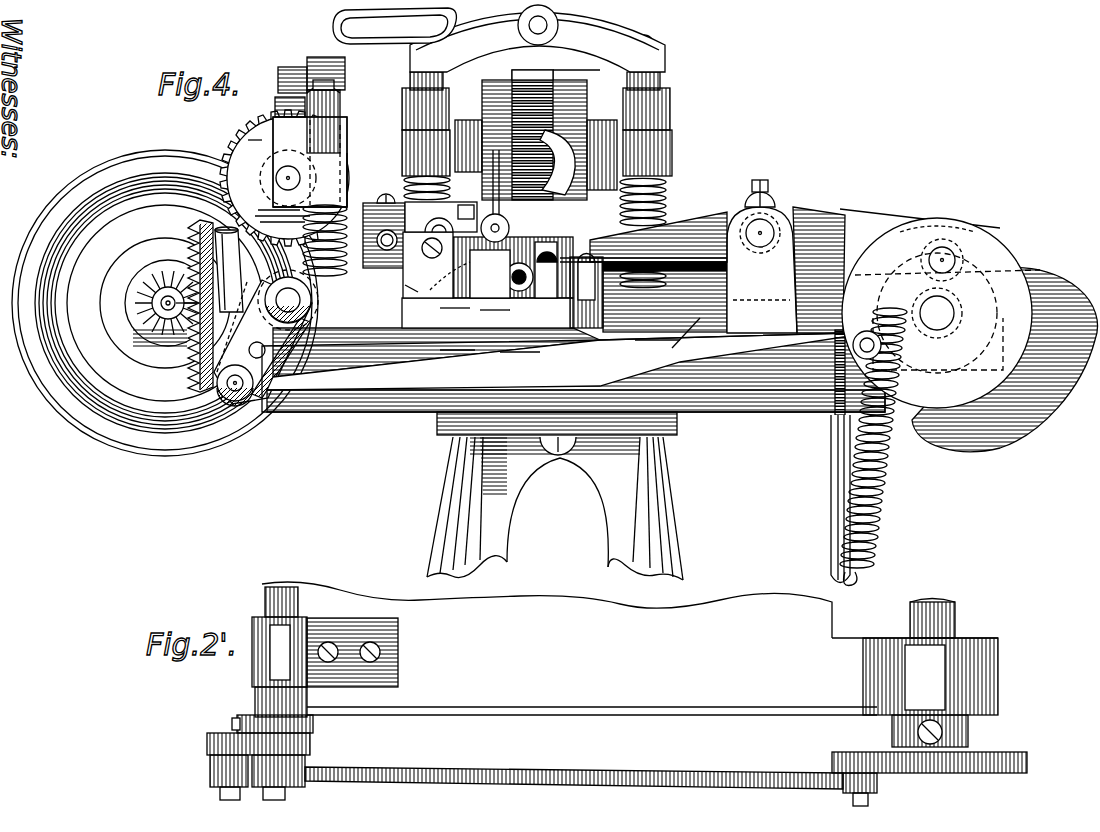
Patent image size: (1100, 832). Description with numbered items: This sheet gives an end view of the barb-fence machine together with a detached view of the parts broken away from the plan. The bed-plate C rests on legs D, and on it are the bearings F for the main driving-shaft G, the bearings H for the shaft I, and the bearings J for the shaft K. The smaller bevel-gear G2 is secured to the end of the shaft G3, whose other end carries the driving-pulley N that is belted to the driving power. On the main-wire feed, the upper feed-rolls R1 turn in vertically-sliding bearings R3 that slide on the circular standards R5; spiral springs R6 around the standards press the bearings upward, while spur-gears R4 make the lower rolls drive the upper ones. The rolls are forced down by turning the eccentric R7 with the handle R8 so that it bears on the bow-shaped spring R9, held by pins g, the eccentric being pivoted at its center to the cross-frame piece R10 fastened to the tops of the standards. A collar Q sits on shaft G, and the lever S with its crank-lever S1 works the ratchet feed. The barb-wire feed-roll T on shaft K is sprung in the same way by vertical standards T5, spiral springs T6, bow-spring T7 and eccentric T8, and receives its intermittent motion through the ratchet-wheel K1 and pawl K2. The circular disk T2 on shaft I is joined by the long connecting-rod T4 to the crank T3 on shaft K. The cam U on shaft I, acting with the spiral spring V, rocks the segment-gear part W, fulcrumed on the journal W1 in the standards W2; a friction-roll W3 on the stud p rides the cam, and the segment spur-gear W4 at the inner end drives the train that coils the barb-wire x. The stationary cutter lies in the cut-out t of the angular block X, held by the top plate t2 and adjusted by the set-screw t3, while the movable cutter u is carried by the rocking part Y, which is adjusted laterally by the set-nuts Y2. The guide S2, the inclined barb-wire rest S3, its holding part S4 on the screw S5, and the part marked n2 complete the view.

In FIG. 4, the driving-pulley N is at (165, 303).
In FIG. 4, the main driving-shaft G is at (192, 360).
In FIG. 4, the smaller bevel-gear G2 is at (168, 286).
In FIG. 4, the shaft G3 is at (160, 305).
In FIG. 4, the shaft K is at (283, 273).
In FIG. 2', the shaft K is at (298, 600).
In FIG. 2', the ratchet-wheel K1 is at (313, 727).
In FIG. 4, the pawl K2 is at (229, 269).
In FIG. 2', the pawl K2 is at (235, 724).
In FIG. 4, the bearings J is at (314, 342).
In FIG. 2', the bearings J is at (325, 667).
In FIG. 4, the lower barb-wire feed-roll T is at (258, 165).
In FIG. 4, the circular disk T2 is at (948, 225).
In FIG. 2', the circular disk T2 is at (975, 773).
In FIG. 4, the crank T3 is at (238, 402).
In FIG. 2', the crank T3 is at (207, 742).
In FIG. 4, the connecting-rod T4 is at (576, 361).
In FIG. 2', the connecting-rod T4 is at (210, 770).
In FIG. 4, the vertical standards T5 is at (262, 125).
In FIG. 4, the spiral springs T6 is at (348, 210).
In FIG. 4, the bow-spring T7 is at (275, 104).
In FIG. 4, the eccentric T8 is at (290, 67).
In FIG. 4, the lever S is at (331, 240).
In FIG. 4, the crank-lever S1 is at (539, 268).
In FIG. 4, the guide S2 is at (376, 235).
In FIG. 4, the barb-wire rest S3 is at (513, 267).
In FIG. 4, the holding part S4 is at (384, 191).
In FIG. 4, the screw S5 is at (490, 274).
In FIG. 4, the angular stationary block X is at (487, 313).
In FIG. 4, the angular rocking part Y is at (486, 194).
In FIG. 4, the set-nuts Y2 is at (400, 330).
In FIG. 4, the bed-plate C is at (573, 372).
In FIG. 4, the legs D is at (555, 496).
In FIG. 4, the collar Q is at (679, 343).
In FIG. 4, the upper feed-rolls R1 is at (470, 120).
In FIG. 4, the sliding bearings R3 is at (402, 137).
In FIG. 4, the spur-gears R4 is at (532, 66).
In FIG. 4, the circular standards R5 is at (402, 100).
In FIG. 4, the spiral springs R6 is at (667, 195).
In FIG. 4, the eccentric R7 is at (560, 32).
In FIG. 4, the handle R8 is at (394, 26).
In FIG. 4, the bow-shaped spring R9 is at (576, 72).
In FIG. 4, the cross-frame piece R10 is at (537, 43).
In FIG. 4, the rocking segment-gear part W is at (842, 215).
In FIG. 4, the journal W1 is at (758, 245).
In FIG. 4, the standards W2 is at (639, 201).
In FIG. 4, the friction-roll W3 is at (955, 250).
In FIG. 4, the segment spur-gear W4 is at (555, 162).
In FIG. 4, the screw n2 is at (688, 275).
In FIG. 4, the bearings F is at (826, 435).
In FIG. 4, the cam U is at (1030, 282).
In FIG. 4, the shaft I is at (941, 313).
In FIG. 2', the shaft I is at (955, 608).
In FIG. 4, the stud p is at (956, 260).
In FIG. 4, the spiral spring V is at (912, 460).
In FIG. 4, the cut-out t is at (428, 265).
In FIG. 4, the top plate t2 is at (441, 217).
In FIG. 4, the set-screw t3 is at (430, 259).
In FIG. 4, the movable cutter u is at (466, 212).
In FIG. 4, the pins g is at (450, 277).
In FIG. 4, the barb-wire x is at (411, 292).
In FIG. 2', the bearings H is at (930, 692).